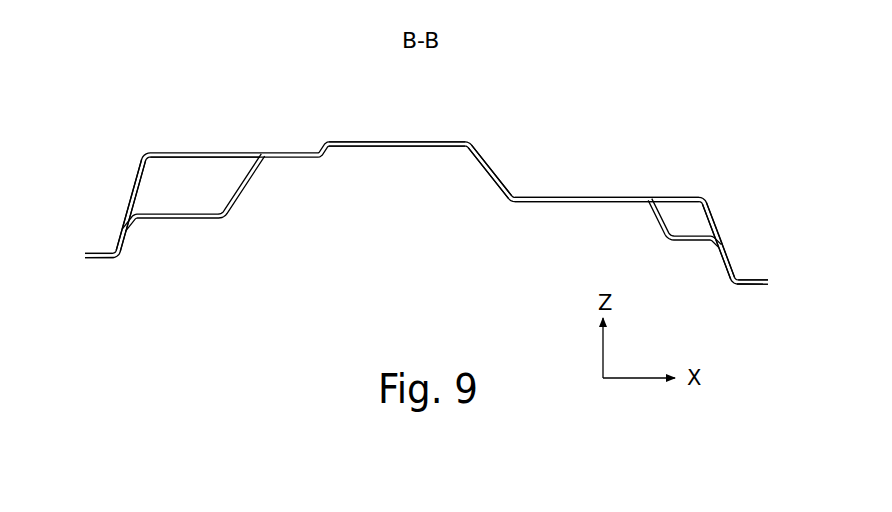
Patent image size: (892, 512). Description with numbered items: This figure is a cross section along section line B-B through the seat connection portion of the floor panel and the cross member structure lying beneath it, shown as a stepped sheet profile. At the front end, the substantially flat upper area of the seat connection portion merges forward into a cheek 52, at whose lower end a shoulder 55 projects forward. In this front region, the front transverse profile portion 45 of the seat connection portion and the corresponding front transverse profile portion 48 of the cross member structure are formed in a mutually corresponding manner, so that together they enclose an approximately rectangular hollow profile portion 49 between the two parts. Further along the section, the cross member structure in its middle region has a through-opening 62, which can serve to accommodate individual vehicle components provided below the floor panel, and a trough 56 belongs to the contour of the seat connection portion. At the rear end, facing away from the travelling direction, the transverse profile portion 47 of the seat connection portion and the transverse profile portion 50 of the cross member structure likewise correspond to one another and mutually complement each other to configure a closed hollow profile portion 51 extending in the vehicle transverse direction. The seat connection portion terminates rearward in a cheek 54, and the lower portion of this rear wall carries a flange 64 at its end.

The front transverse profile portion 45 is at (197, 112).
The transverse profile portion 47 is at (647, 165).
The front transverse profile portion 48 is at (222, 242).
The hollow profile portion 49 is at (228, 172).
The transverse profile portion 50 is at (662, 258).
The hollow profile portion 51 is at (695, 213).
The cheek 52 is at (137, 170).
The cheek 54 is at (722, 230).
The shoulder 55 is at (100, 260).
The trough 56 is at (521, 148).
The through-opening 62 is at (436, 174).
The flange 64 is at (753, 277).